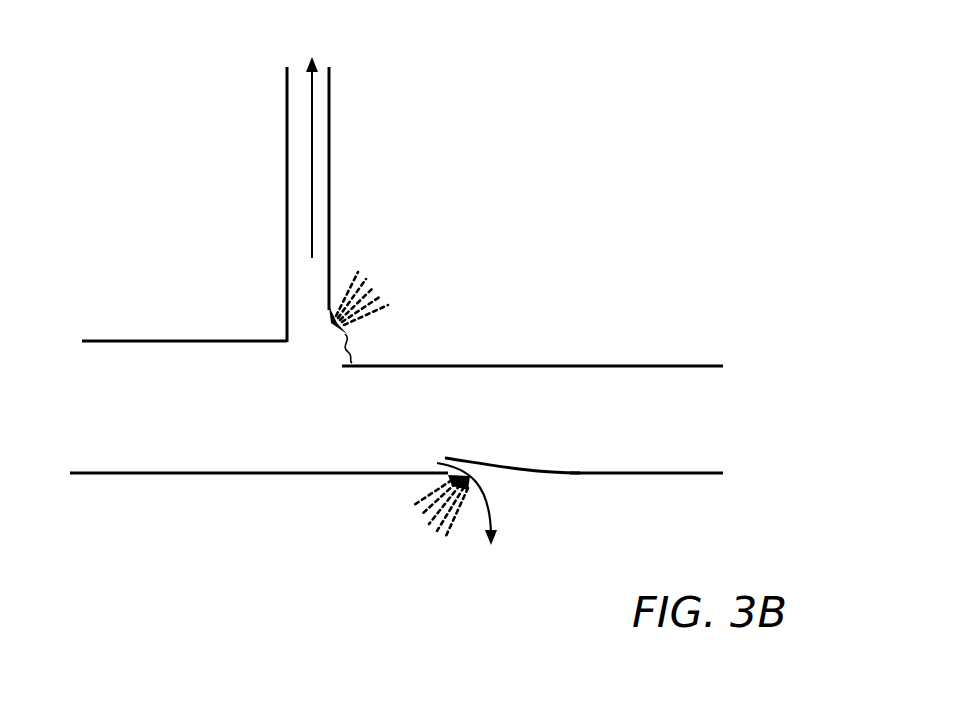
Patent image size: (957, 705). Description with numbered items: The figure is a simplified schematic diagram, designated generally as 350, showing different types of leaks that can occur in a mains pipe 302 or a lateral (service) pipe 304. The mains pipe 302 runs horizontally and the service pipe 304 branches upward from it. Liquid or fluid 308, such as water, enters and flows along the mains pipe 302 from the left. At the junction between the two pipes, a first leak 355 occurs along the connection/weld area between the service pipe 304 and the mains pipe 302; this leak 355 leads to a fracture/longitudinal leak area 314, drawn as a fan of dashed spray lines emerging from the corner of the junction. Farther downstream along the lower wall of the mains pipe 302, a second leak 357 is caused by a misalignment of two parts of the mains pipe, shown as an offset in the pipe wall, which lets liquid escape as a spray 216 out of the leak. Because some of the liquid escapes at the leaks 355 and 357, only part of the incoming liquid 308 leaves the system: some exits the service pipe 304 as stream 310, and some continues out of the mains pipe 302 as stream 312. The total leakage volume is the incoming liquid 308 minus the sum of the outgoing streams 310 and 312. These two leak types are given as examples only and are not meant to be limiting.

The microfluidic junction device 350 is at (743, 133).
The mains pipe 302 is at (125, 340).
The lateral (service) pipe 304 is at (287, 295).
The stream 310 is at (313, 170).
The stream 312 is at (660, 407).
The liquid or fluid 308 is at (108, 412).
The leak 355 is at (349, 337).
The fracture/longitudinal leak area 314 is at (378, 283).
The spray region 216 is at (432, 537).
The leak 357 is at (508, 517).